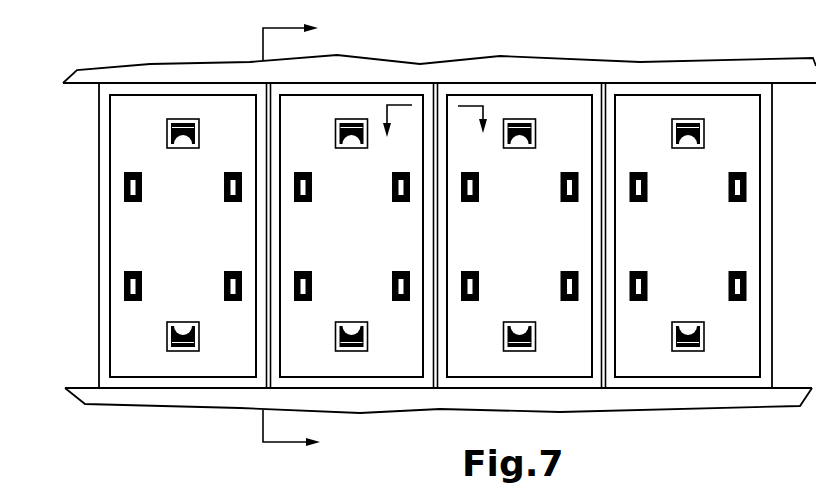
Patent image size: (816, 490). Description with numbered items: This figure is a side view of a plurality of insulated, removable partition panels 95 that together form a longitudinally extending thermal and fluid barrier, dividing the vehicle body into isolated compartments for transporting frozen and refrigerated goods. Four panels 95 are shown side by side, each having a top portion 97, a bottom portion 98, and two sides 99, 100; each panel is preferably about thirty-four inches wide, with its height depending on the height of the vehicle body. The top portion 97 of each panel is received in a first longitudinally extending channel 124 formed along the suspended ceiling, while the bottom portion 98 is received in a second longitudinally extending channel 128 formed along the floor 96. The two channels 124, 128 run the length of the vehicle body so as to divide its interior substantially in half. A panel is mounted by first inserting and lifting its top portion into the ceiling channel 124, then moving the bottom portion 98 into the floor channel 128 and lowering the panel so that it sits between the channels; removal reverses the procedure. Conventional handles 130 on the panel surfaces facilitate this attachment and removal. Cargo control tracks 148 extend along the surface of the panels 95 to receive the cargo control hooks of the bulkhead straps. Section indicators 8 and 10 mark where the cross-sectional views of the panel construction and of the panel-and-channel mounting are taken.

The section line 8- 8 is at (438, 135).
The section line 10- 10 is at (307, 237).
The partition panel 95 is at (543, 246).
The floor 96 is at (200, 400).
The top portion 97 is at (564, 86).
The bottom portion 98 is at (565, 388).
The side 99 is at (443, 237).
The side 100 is at (594, 231).
The first longitudinally extending channel 124 is at (78, 88).
The second longitudinally extending channel 128 is at (84, 381).
The handles 130 is at (521, 118).
The cargo control tracks 148 is at (473, 203).